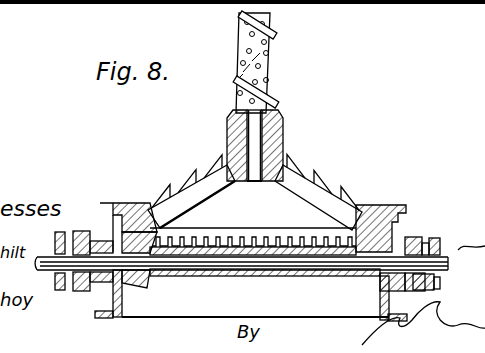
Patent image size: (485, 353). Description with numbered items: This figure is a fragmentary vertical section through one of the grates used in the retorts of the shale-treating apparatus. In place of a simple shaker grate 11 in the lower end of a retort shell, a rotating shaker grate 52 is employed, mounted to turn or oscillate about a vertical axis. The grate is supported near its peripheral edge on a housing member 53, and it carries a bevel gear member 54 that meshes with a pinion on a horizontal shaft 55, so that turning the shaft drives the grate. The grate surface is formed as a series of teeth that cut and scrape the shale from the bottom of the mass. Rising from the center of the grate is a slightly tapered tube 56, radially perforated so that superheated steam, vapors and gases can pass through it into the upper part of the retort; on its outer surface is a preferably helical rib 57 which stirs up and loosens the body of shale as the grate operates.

The shaker grate 11 is at (272, 178).
The shaker grate 52 is at (300, 186).
The housing member 53 is at (410, 216).
The bevel gear member 54 is at (256, 236).
The shaft 55 is at (446, 242).
The tapered tube 56 is at (268, 74).
The helical rib 57 is at (276, 34).